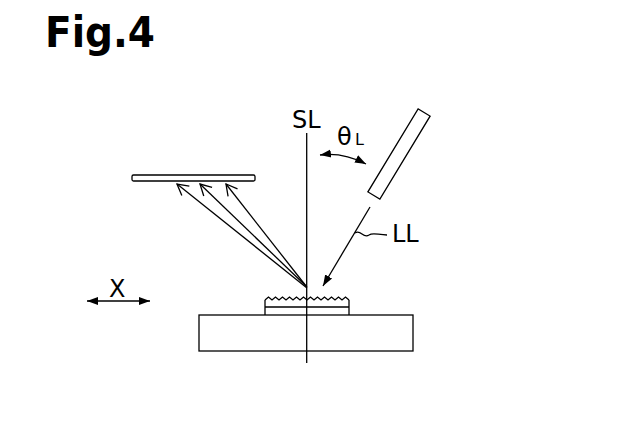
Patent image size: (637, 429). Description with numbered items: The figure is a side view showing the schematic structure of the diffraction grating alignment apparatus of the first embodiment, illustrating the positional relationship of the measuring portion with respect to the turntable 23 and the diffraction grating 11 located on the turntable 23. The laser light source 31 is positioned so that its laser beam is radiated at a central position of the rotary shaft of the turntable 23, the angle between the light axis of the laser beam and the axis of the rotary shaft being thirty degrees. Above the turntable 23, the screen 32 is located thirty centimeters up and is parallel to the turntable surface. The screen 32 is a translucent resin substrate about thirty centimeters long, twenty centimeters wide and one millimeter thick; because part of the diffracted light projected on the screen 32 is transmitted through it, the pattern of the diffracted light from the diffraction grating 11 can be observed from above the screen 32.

The diffraction grating 11 is at (349, 303).
The turntable 23 is at (393, 338).
The laser light source 31 is at (420, 142).
The screen 32 is at (150, 175).